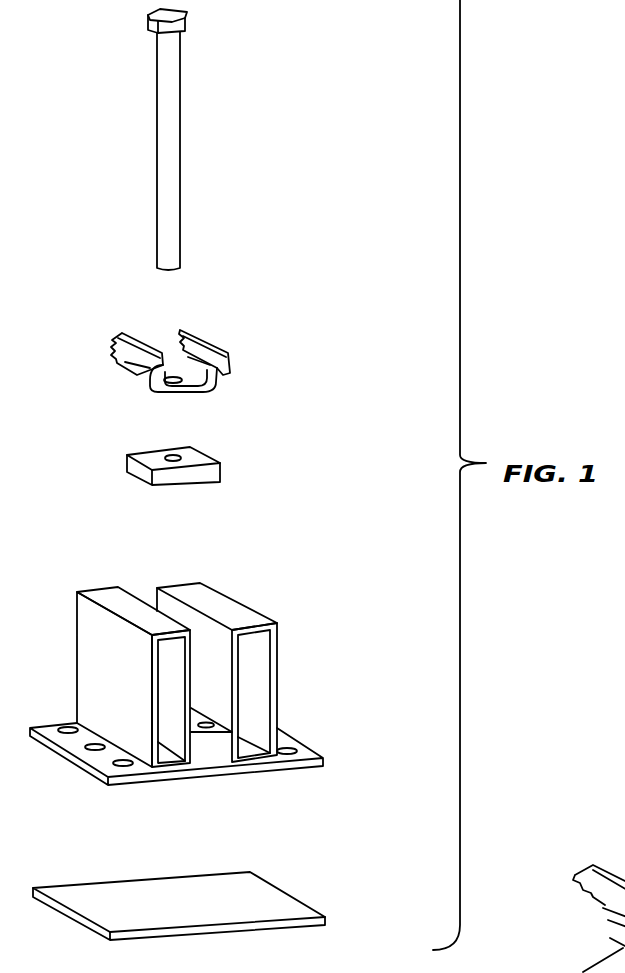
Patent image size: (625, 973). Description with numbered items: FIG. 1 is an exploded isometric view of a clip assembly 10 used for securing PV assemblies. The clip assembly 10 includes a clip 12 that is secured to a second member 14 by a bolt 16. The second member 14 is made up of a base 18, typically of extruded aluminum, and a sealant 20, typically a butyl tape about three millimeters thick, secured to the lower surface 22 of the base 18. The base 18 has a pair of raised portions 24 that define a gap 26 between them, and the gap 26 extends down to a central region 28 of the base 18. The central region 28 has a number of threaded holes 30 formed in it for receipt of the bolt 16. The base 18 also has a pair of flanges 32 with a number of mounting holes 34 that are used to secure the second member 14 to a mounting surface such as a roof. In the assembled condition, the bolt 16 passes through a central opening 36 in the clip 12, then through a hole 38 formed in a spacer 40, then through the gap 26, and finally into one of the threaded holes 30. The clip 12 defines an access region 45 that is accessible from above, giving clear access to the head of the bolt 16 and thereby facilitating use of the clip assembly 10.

The clip assembly 10 is at (263, 50).
The clip 12 is at (222, 338).
The second member 14 is at (377, 594).
The bolt 16 is at (170, 132).
The base 18 is at (89, 560).
The sealant 20 is at (123, 887).
The lower surface 22 is at (170, 782).
The raised portions 24 is at (94, 654).
The gap 26 is at (147, 595).
The central region 28 is at (215, 752).
The threaded holes 30 is at (207, 720).
The flanges 32 is at (118, 777).
The mounting holes 34 is at (72, 725).
The central opening 36 is at (172, 365).
The hole 38 is at (173, 452).
The spacer 40 is at (213, 460).
The access region 45 is at (160, 343).